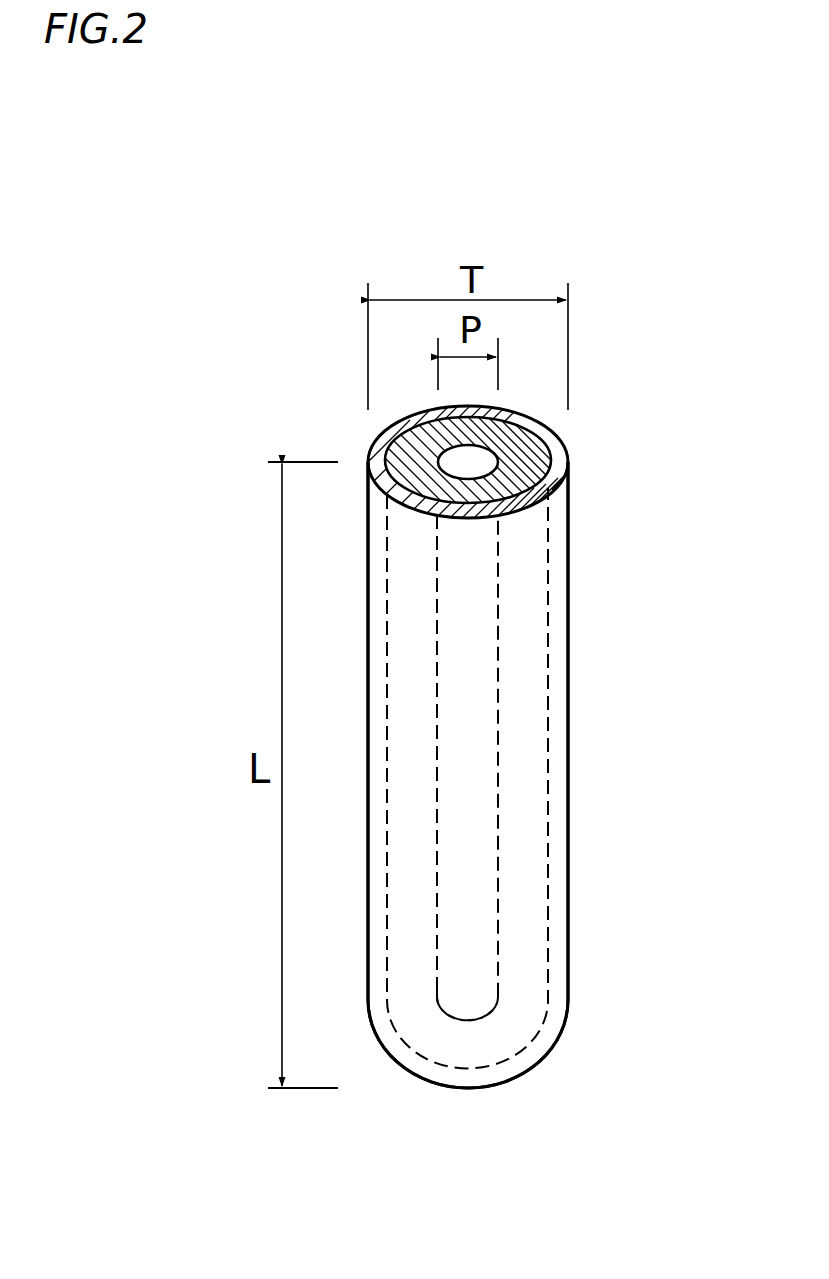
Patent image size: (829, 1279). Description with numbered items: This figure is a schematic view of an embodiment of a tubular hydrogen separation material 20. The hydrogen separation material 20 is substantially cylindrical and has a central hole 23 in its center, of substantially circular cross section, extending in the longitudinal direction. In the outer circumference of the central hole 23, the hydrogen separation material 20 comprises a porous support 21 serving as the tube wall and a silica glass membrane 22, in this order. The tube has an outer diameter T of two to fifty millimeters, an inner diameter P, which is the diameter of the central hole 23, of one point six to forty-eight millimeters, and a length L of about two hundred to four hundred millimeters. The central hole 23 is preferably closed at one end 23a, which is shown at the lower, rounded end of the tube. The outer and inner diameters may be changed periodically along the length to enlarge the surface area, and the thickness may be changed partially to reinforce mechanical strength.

The hydrogen separation material 20 is at (625, 740).
The porous support 21 is at (567, 473).
The silica glass membrane 22 is at (563, 450).
The central hole 23 is at (498, 427).
The end 23a is at (463, 1020).